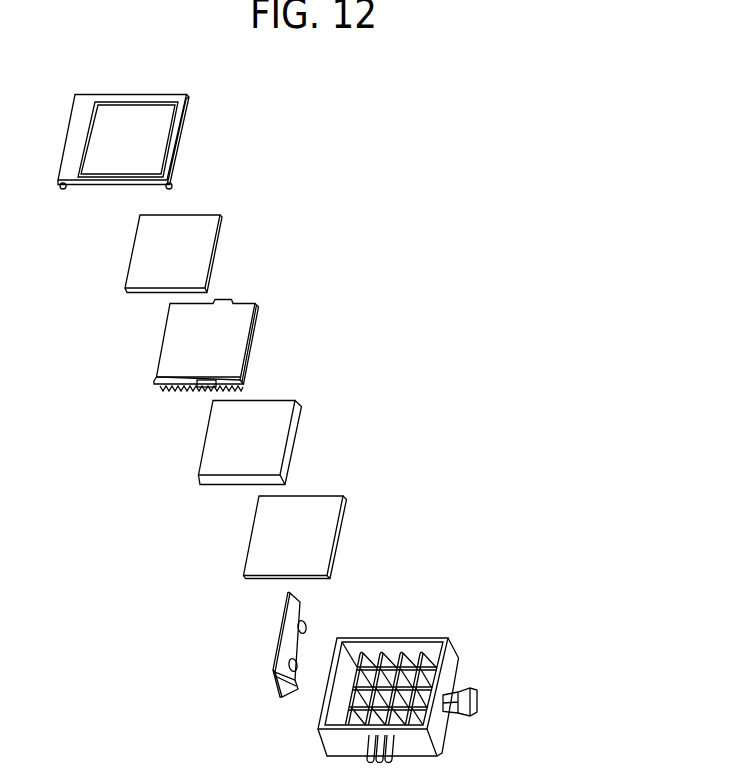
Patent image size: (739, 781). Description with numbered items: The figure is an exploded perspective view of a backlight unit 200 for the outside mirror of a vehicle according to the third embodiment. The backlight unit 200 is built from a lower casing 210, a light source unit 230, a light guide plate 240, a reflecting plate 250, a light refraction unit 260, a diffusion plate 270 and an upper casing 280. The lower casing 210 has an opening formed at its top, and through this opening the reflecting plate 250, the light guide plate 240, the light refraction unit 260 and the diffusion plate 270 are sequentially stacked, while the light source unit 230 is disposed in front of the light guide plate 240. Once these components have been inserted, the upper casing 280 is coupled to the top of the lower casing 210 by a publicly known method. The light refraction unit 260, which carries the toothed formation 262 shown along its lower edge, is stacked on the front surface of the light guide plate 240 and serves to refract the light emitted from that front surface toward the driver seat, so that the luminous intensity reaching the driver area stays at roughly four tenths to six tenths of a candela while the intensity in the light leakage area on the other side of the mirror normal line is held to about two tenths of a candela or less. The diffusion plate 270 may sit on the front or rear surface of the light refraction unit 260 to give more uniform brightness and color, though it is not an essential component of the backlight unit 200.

The backlight unit 200 is at (565, 132).
The lower casing 210 is at (458, 658).
The light source unit 230 is at (332, 607).
The light guide plate 240 is at (303, 438).
The reflecting plate 250 is at (350, 523).
The light refraction unit 260 is at (238, 350).
The teeth 262 is at (157, 387).
The diffusion plate 270 is at (233, 247).
The upper casing 280 is at (190, 145).